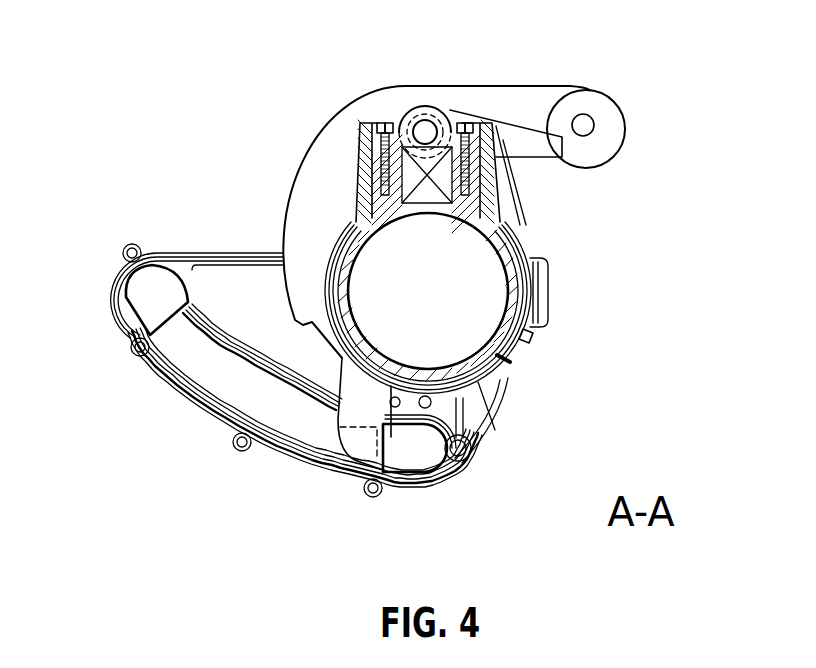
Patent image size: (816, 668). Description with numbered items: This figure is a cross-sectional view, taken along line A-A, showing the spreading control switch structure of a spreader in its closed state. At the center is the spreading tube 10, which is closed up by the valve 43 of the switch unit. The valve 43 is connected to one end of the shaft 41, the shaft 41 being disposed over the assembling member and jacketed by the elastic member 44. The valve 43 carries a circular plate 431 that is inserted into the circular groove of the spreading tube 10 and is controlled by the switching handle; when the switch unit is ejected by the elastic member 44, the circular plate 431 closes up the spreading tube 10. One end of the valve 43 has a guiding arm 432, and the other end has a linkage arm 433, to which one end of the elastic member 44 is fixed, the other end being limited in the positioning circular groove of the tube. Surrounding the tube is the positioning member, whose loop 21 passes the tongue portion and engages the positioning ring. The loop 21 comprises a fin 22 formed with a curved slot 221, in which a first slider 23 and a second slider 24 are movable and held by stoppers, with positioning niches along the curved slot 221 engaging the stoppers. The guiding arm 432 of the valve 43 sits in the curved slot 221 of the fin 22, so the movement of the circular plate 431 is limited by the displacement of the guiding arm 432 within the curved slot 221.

The spreading tube 10 is at (502, 317).
The loop 21 is at (525, 254).
The fin 22 is at (173, 380).
The curved slot 221 is at (233, 378).
The first slider 23 is at (413, 458).
The second slider 24 is at (152, 308).
The shaft 41 is at (427, 105).
The valve 43 is at (313, 183).
The circular plate 431 is at (528, 337).
The guiding arm 432 is at (357, 458).
The linkage arm 433 is at (597, 102).
The elastic member 44 is at (443, 105).